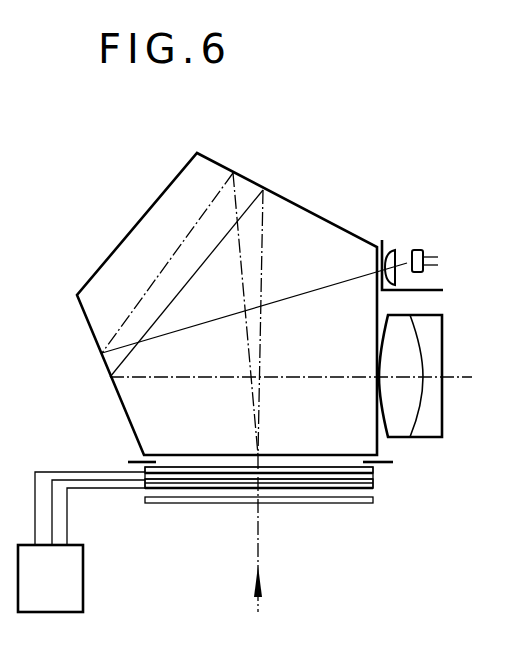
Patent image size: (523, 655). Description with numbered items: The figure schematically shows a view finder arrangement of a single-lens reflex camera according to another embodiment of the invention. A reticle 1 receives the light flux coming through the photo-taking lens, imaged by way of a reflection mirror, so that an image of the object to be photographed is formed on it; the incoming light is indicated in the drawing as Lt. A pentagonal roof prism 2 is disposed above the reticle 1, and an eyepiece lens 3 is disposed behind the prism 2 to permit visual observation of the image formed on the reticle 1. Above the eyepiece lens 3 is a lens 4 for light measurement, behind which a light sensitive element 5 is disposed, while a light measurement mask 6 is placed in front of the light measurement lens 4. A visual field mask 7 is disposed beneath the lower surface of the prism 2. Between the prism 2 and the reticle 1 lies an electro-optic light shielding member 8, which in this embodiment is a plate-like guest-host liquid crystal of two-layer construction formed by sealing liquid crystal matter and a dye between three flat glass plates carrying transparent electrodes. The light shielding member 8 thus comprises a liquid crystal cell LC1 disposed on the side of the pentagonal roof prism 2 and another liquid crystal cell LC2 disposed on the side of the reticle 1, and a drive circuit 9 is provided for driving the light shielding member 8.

The reticle 1 is at (373, 500).
The pentagonal roof prism 2 is at (322, 218).
The eyepiece lens 3 is at (436, 346).
The lens for light measurement 4 is at (391, 250).
The light sensitive element 5 is at (418, 250).
The light measurement mask 6 is at (382, 240).
The visual field mask 7 is at (393, 462).
The electro-optic light shielding member 8 is at (373, 479).
The drive circuit 9 is at (83, 594).
The liquid crystal cell LC1 is at (143, 470).
The liquid crystal cell LC2 is at (143, 484).
The light beam Lt is at (259, 606).